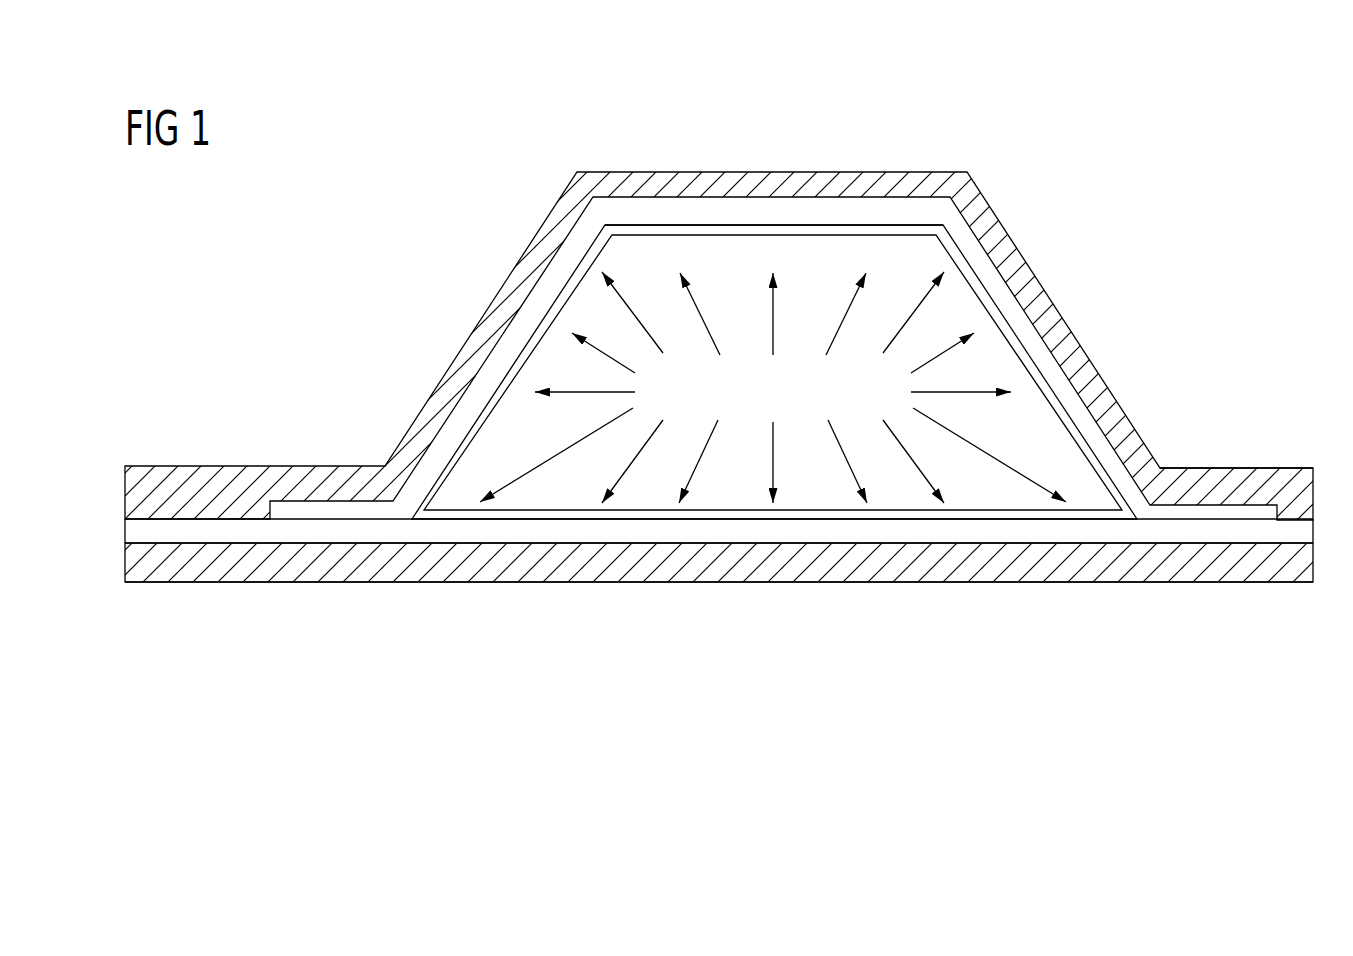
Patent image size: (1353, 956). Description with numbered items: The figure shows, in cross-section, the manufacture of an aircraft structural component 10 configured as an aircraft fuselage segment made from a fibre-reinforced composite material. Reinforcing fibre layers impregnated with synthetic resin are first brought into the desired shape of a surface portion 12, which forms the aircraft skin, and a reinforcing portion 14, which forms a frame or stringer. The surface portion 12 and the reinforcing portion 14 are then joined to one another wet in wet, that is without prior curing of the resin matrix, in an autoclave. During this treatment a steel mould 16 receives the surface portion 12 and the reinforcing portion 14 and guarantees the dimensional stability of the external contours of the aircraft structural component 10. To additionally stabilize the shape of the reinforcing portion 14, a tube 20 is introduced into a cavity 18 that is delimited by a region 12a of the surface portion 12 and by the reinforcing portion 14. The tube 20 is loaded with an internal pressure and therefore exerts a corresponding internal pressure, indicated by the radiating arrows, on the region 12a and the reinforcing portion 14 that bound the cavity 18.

The aircraft structural component 10 is at (915, 190).
The surface portion 12 is at (978, 540).
The region of the surface portion 12a is at (669, 534).
The reinforcing portion 14 is at (972, 250).
The steel mould 16 is at (1202, 482).
The cavity 18 is at (775, 250).
The tube 20 is at (690, 228).